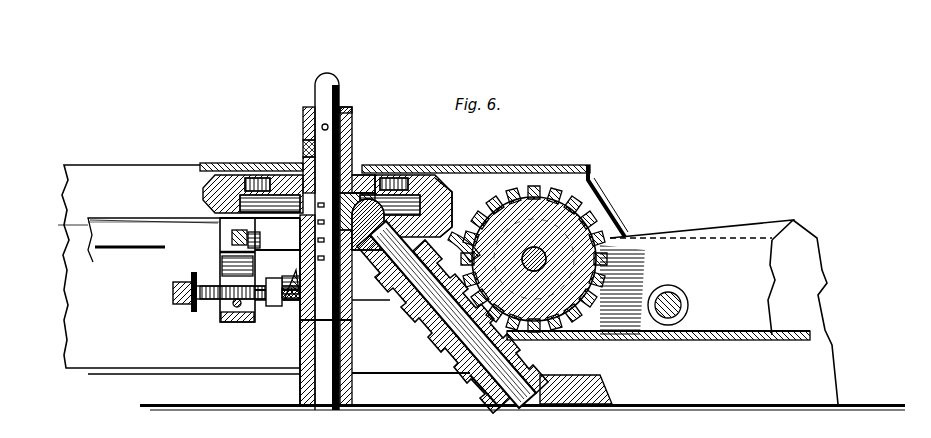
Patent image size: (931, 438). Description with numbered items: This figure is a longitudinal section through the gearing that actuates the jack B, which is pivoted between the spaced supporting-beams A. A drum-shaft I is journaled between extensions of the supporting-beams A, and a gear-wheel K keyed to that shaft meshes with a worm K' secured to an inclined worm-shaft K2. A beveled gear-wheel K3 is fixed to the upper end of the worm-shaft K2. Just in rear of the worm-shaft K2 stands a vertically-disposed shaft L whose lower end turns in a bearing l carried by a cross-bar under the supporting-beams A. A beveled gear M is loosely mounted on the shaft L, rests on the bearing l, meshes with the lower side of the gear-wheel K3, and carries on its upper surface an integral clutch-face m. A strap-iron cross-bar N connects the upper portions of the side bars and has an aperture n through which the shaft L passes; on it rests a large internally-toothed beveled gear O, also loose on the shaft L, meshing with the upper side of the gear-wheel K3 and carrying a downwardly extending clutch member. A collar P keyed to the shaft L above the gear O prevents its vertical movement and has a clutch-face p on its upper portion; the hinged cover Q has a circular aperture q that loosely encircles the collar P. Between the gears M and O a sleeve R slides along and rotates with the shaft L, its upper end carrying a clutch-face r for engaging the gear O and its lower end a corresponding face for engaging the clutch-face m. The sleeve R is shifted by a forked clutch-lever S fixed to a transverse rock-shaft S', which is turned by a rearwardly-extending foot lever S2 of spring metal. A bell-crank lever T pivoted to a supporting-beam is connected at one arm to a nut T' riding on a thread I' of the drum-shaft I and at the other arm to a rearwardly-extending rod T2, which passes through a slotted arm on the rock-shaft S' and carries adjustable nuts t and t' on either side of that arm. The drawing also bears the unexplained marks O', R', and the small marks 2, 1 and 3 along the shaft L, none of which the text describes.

The supporting-beam A is at (448, 284).
The jack B is at (696, 277).
The vertically-disposed shaft L is at (313, 87).
The bearing l is at (300, 388).
The collar P is at (356, 118).
The clutch-face p is at (352, 107).
The circular aperture q is at (296, 163).
The cover Q is at (583, 165).
The aperture n is at (358, 175).
The cross-bar N is at (388, 176).
The internally-toothed beveled gear O is at (445, 189).
The bearing block O' is at (253, 209).
The clutch-face m is at (400, 240).
The rod part 2 is at (324, 197).
The rod part 1 is at (323, 214).
The rod part 3 is at (323, 232).
The clutch-face r is at (322, 250).
The forked clutch-lever S is at (237, 270).
The transverse rock-shaft S' is at (225, 249).
The rearwardly-extending lever S2 is at (160, 240).
The sleeve R is at (260, 311).
The bracket part R' is at (281, 276).
The nut t' is at (290, 297).
The beveled gear M is at (270, 320).
The rearwardly-extending rod T2 is at (205, 302).
The nut t is at (176, 297).
The gear-wheel K is at (534, 255).
The nut T' is at (616, 201).
The drum-shaft I is at (613, 197).
The bell-crank lever T is at (462, 245).
The thread I' is at (658, 299).
The worm K' is at (453, 314).
The beveled gear-wheel K3 is at (431, 324).
The inclined worm-shaft K2 is at (468, 380).